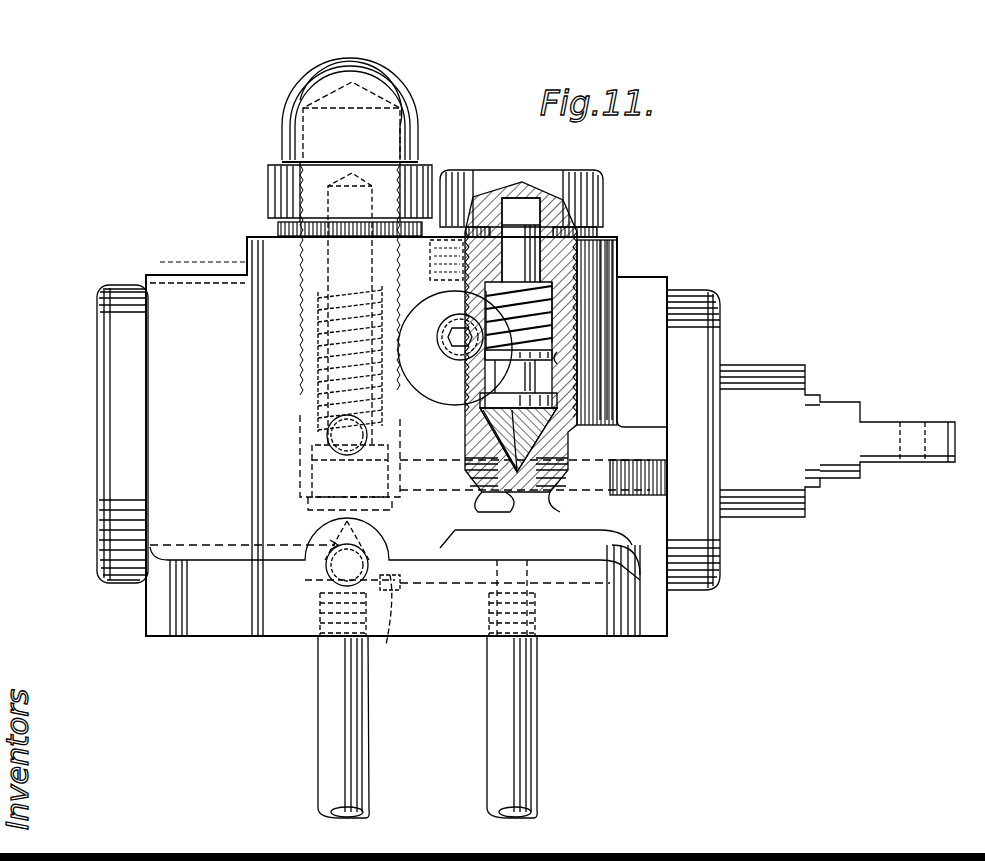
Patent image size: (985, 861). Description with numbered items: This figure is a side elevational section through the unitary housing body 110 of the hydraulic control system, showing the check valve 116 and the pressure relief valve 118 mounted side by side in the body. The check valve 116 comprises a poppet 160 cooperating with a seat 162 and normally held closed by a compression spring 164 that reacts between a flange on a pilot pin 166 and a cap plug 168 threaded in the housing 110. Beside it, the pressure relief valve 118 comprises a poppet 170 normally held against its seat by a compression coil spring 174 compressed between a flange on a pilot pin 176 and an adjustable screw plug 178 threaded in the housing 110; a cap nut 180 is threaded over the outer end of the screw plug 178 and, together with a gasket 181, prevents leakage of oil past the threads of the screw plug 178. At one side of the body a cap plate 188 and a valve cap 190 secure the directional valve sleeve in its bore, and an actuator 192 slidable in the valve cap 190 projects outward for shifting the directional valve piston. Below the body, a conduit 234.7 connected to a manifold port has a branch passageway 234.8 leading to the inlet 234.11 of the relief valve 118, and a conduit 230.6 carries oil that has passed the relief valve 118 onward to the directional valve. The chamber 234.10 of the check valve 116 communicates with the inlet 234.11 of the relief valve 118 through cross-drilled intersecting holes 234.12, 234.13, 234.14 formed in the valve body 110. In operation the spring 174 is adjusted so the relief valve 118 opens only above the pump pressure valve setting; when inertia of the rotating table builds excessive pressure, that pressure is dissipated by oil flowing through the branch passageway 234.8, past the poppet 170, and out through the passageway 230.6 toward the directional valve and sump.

The housing body 110 is at (663, 322).
The check valve 116 is at (612, 206).
The pressure relief valve 118 is at (272, 128).
The poppet 160 is at (550, 418).
The seat 162 is at (560, 440).
The compression spring 164 is at (495, 334).
The pilot pin 166 is at (530, 259).
The cap plug 168 is at (557, 272).
The poppet 170 is at (335, 510).
The compression coil spring 174 is at (400, 362).
The pilot pin 176 is at (300, 332).
The adjustable screw plug 178 is at (310, 265).
The cap nut 180 is at (290, 143).
The gasket 181 is at (278, 232).
The cap plate 188 is at (112, 430).
The valve cap 190 is at (722, 575).
The actuator 192 is at (838, 412).
The conduit 230.6 is at (520, 718).
The conduit 234.7 is at (355, 718).
The branch passageway 234.8 is at (328, 576).
The chamber 234.10 is at (557, 358).
The inlet 234.11 is at (244, 541).
The cross-drilled intersecting hole 234.12 is at (452, 358).
The cross-drilled intersecting hole 234.13 is at (490, 545).
The cross-drilled intersecting hole 234.14 is at (386, 645).